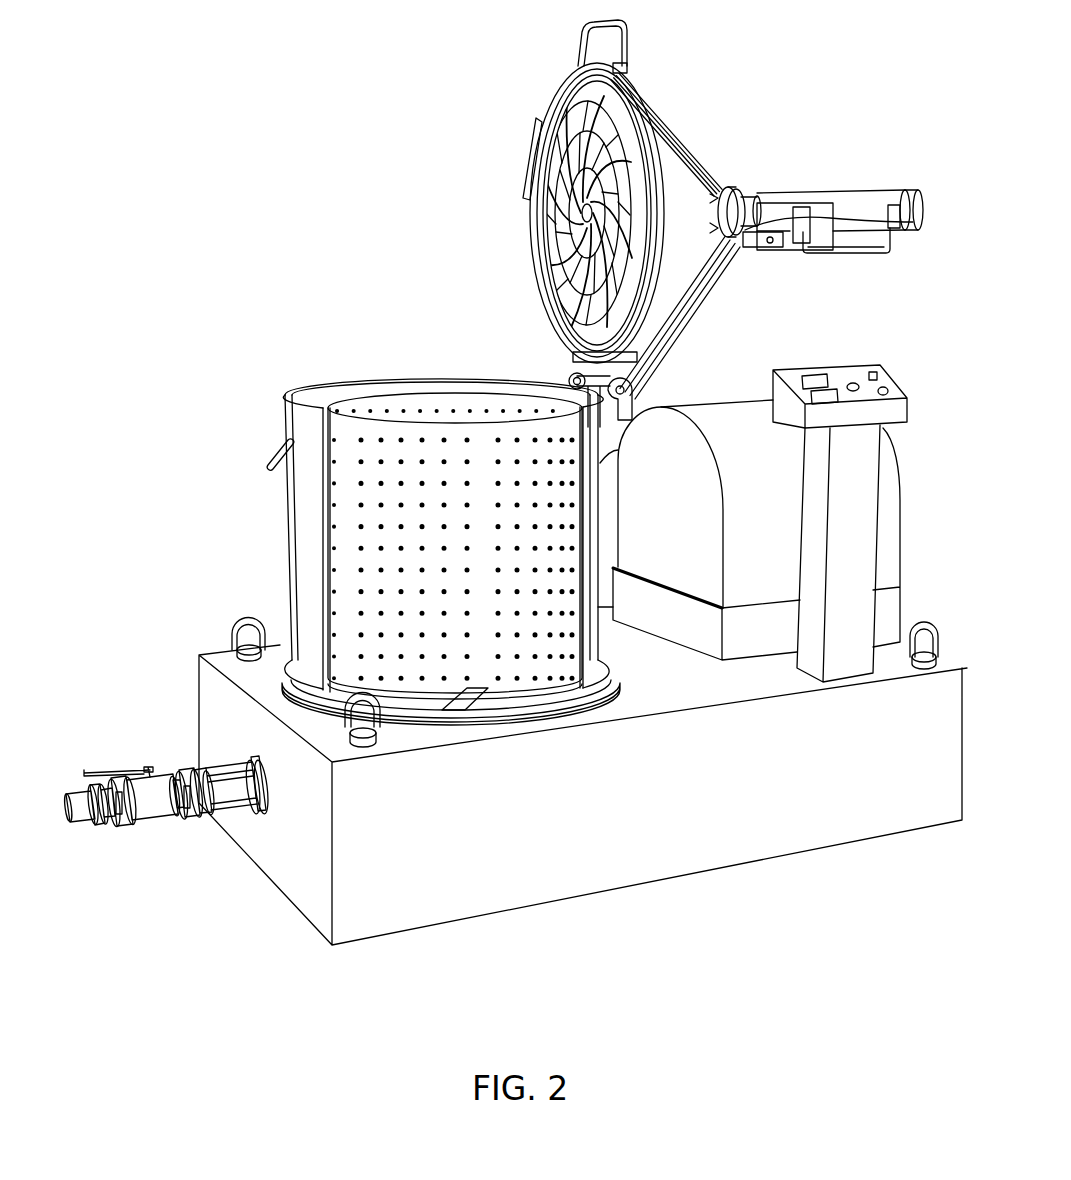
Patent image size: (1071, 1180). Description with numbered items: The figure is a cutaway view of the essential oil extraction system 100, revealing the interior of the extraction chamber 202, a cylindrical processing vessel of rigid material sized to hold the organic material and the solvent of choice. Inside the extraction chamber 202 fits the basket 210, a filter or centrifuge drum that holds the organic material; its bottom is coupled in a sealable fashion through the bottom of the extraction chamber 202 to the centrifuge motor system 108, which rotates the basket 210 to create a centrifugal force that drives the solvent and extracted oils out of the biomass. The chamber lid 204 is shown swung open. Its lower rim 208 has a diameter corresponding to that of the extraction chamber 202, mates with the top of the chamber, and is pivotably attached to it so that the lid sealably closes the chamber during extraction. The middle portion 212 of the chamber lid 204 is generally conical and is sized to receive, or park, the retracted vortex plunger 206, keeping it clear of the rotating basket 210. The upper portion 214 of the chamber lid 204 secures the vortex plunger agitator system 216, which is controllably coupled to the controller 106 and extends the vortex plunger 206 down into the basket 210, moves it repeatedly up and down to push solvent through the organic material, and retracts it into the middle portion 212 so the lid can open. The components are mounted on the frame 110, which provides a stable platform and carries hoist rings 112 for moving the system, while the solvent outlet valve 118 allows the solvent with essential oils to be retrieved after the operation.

The essential oil extraction system 100 is at (256, 137).
The controller 106 is at (867, 513).
The centrifuge motor system 108 is at (719, 403).
The frame 110 is at (727, 840).
The hoist rings 112 is at (248, 617).
The solvent outlet valve 118 is at (188, 772).
The extraction chamber 202 is at (293, 530).
The chamber lid 204 is at (607, 209).
The vortex plunger 206 is at (535, 226).
The lower rim 208 is at (563, 83).
The basket 210 is at (433, 402).
The middle portion 212 is at (690, 148).
The upper portion 214 is at (807, 192).
The vortex plunger agitator system 216 is at (870, 252).